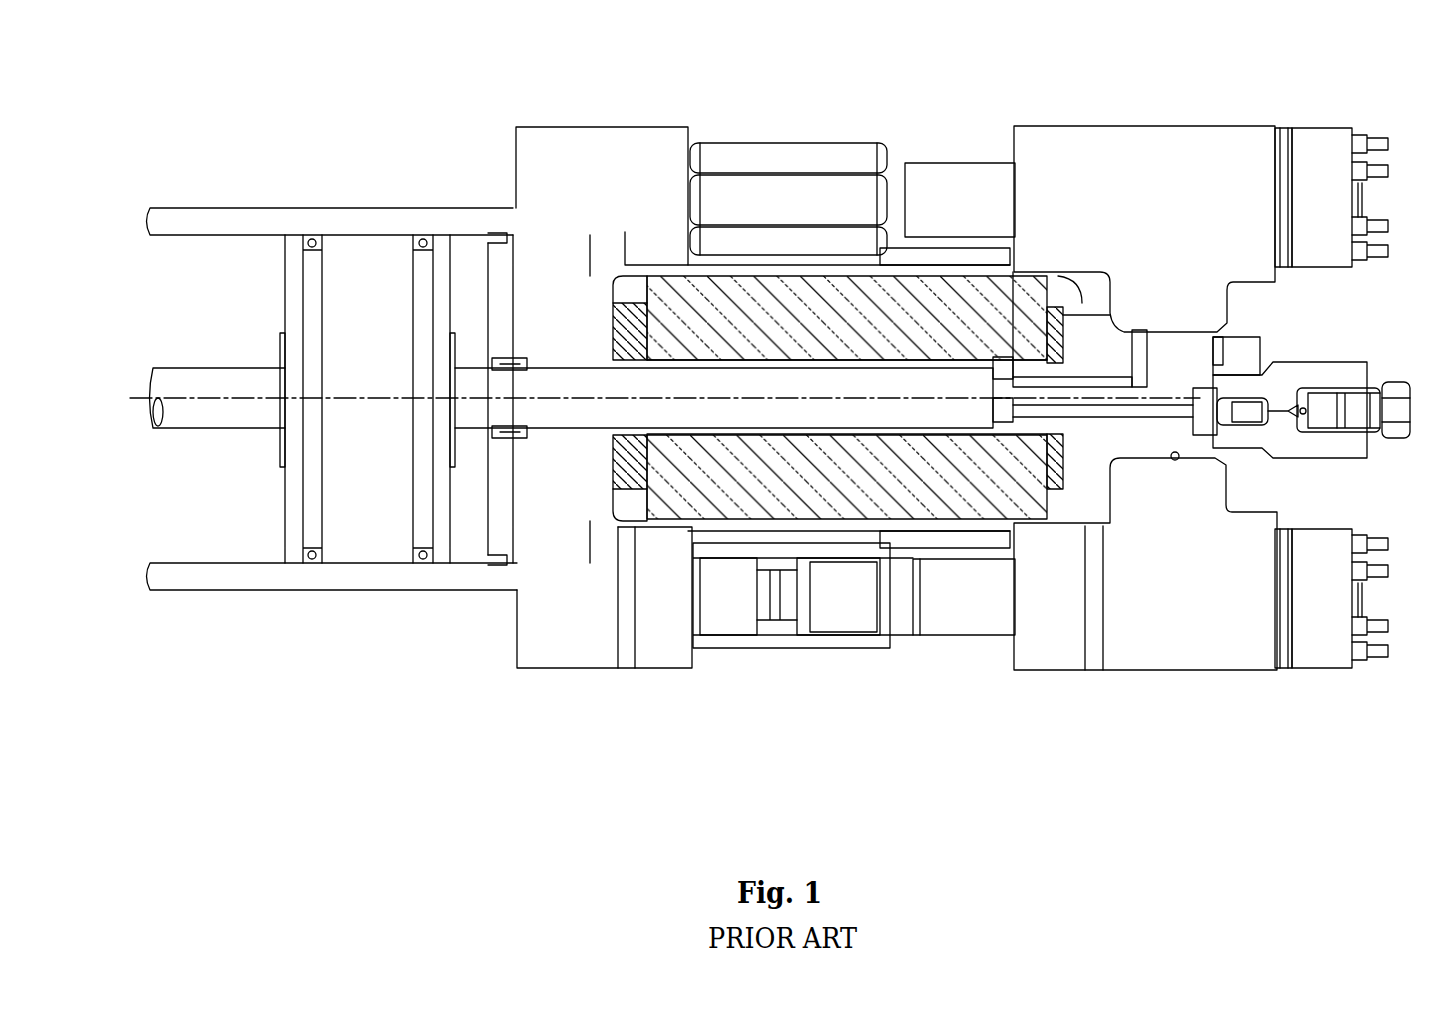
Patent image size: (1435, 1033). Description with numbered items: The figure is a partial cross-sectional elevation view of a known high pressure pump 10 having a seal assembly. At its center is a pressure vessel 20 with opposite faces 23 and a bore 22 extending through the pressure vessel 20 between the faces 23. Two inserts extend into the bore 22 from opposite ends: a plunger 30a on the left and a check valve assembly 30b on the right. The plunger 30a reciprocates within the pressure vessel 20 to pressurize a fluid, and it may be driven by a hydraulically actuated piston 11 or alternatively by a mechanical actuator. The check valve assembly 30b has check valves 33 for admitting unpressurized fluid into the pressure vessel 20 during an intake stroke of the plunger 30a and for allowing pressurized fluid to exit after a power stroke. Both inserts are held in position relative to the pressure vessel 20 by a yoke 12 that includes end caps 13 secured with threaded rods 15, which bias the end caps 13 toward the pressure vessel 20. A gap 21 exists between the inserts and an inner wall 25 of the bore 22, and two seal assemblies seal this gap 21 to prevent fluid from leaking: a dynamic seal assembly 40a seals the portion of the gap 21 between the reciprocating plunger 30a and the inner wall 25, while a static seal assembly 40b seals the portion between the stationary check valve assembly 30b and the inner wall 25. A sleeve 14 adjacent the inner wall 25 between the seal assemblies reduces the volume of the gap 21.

The high pressure pump 10 is at (1008, 710).
The hydraulically actuated piston 11 is at (373, 555).
The yoke 12 is at (975, 97).
The end caps 13 is at (672, 127).
The sleeve 14 is at (765, 355).
The threaded rods 15 is at (930, 163).
The pressure vessel 20 is at (692, 668).
The gap 21 is at (683, 440).
The bore 22 is at (992, 268).
The faces 23 is at (625, 232).
The inner wall 25 is at (985, 375).
The plunger 30a is at (473, 545).
The check valve assembly 30b is at (1210, 452).
The check valves 33 is at (1052, 366).
The dynamic seal assembly 40a is at (606, 468).
The static seal assembly 40b is at (1076, 462).